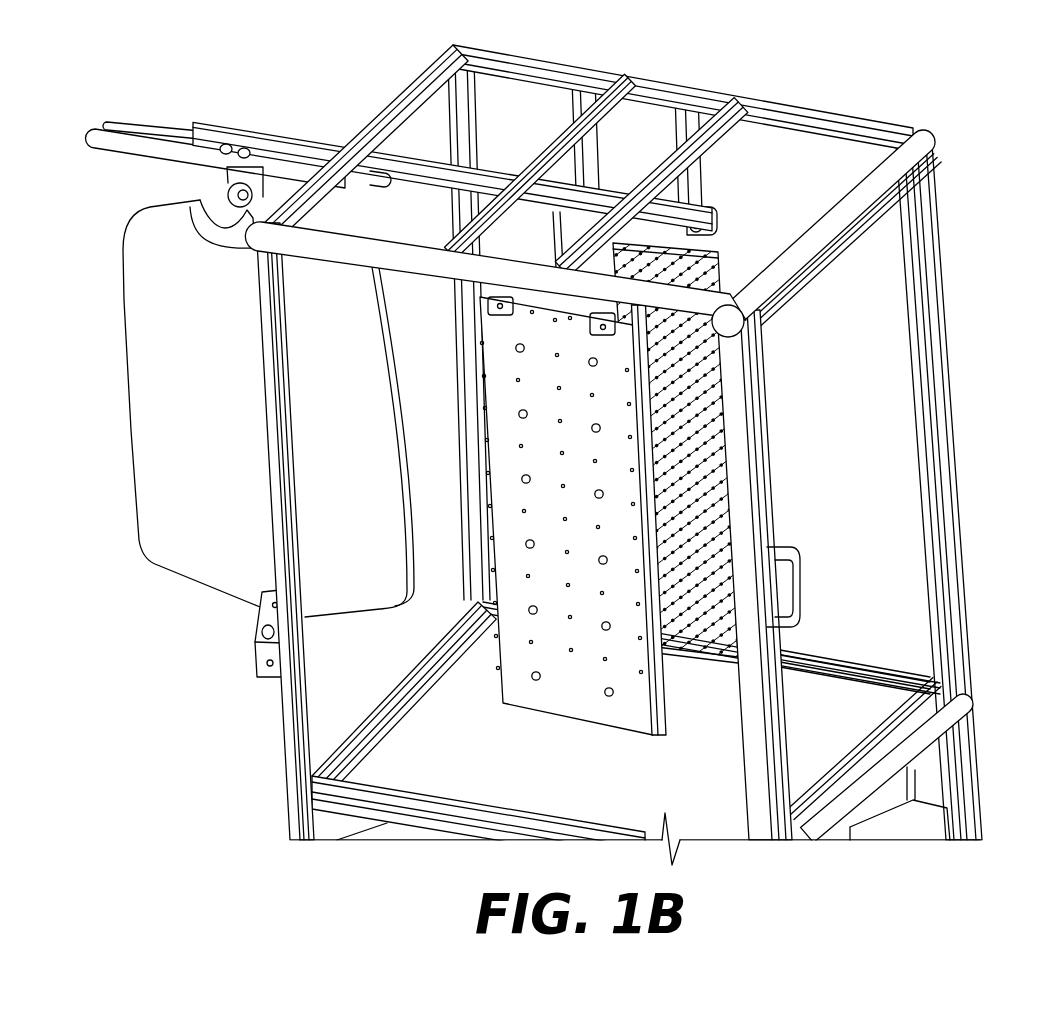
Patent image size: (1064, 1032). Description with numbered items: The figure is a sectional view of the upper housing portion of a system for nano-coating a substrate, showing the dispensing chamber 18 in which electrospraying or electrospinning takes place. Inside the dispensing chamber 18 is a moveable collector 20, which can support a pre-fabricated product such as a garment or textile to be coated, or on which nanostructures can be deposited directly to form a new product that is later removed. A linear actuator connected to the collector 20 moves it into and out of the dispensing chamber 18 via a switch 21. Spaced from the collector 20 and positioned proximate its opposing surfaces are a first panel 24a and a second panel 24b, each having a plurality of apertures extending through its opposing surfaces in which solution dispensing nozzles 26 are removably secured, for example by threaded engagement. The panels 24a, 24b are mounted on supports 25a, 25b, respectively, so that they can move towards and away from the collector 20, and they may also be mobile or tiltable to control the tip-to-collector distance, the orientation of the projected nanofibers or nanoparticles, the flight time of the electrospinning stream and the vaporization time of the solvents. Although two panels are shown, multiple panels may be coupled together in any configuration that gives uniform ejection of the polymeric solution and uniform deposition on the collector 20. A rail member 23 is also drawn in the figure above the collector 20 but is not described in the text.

The dispensing chamber 18 is at (880, 340).
The moveable collector 20 is at (163, 395).
The switch 21 is at (263, 676).
The rail 23 is at (252, 125).
The first panel 24a is at (557, 697).
The second panel 24b is at (697, 650).
The support 25a is at (626, 78).
The support 25b is at (735, 101).
The solution dispensing nozzles 26 is at (722, 513).